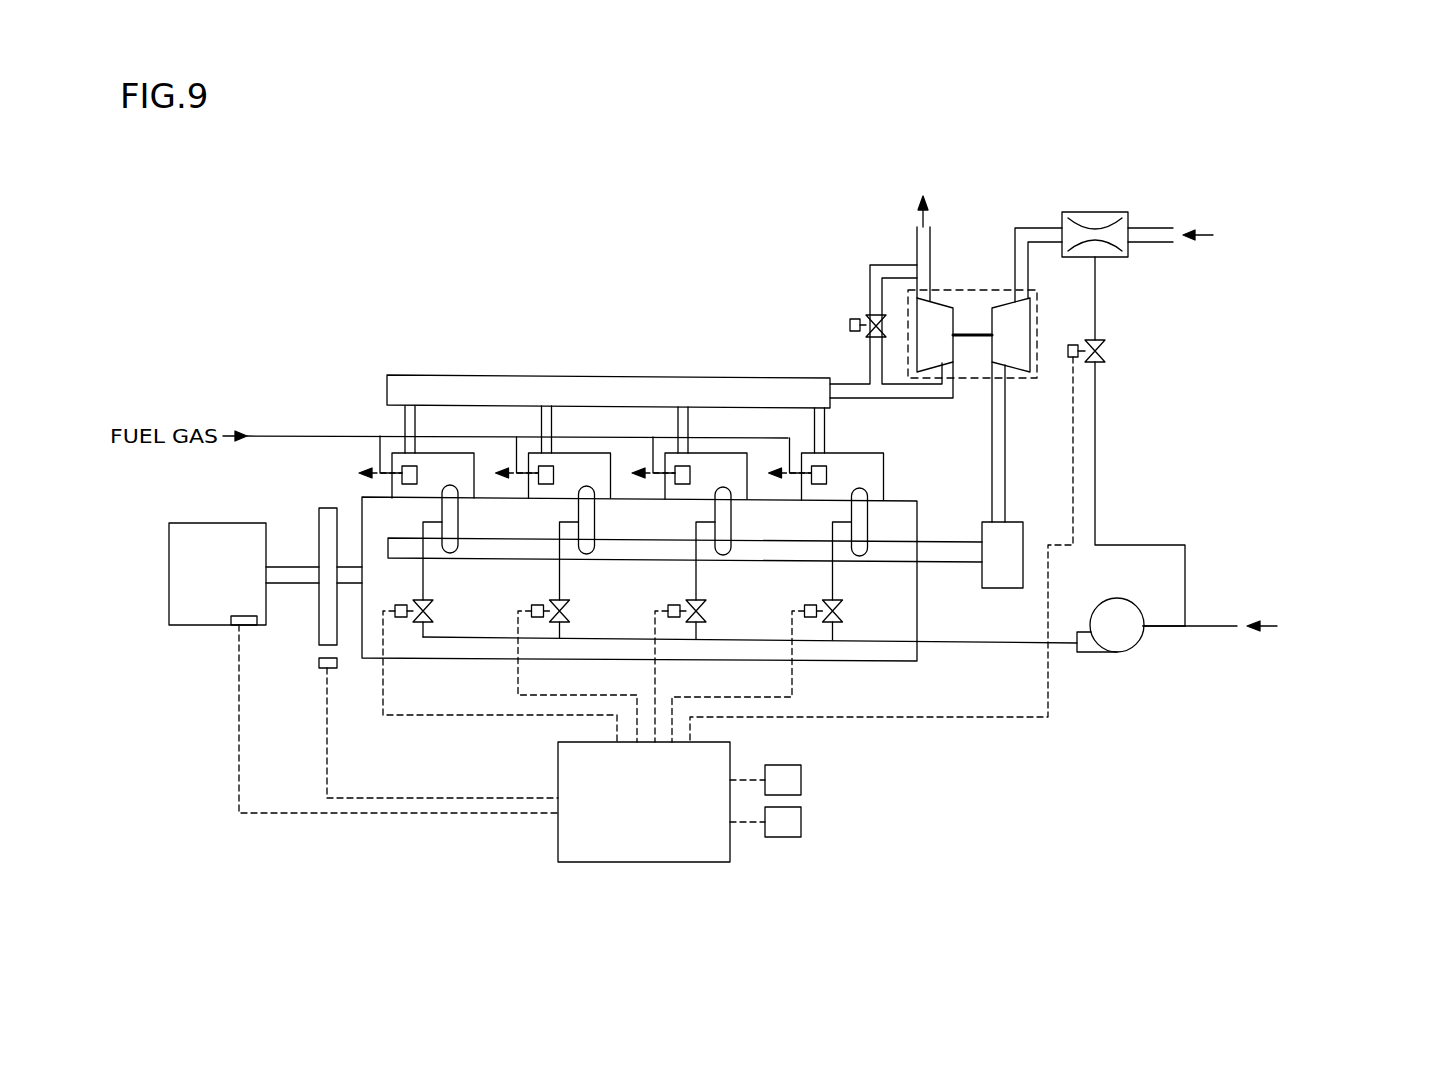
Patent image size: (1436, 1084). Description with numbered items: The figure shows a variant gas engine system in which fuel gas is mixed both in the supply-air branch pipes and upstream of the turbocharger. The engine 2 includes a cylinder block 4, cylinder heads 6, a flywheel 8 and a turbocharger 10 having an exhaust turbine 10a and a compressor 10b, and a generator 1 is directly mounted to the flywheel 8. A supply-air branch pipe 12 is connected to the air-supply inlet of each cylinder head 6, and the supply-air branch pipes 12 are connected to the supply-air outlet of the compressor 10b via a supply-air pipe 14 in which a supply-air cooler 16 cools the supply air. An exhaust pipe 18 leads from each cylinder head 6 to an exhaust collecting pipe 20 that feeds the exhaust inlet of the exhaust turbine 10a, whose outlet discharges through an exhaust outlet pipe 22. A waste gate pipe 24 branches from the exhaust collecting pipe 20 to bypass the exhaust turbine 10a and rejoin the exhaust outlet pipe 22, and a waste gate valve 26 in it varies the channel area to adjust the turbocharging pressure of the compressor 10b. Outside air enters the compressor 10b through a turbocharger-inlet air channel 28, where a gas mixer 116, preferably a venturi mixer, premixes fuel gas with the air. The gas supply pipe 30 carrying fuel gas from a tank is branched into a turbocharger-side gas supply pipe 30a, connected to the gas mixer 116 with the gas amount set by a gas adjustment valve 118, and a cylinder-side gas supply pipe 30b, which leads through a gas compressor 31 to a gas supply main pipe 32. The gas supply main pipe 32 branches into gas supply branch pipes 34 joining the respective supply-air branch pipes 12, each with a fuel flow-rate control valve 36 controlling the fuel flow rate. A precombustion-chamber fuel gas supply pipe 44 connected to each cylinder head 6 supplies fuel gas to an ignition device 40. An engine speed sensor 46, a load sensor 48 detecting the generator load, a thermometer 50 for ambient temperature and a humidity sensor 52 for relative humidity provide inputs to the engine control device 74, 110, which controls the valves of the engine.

The generator 1 is at (211, 523).
The engine 2 is at (424, 664).
The cylinder block 4 is at (918, 521).
The cylinder head 6 is at (884, 473).
The flywheel 8 is at (319, 515).
The turbocharger 10 is at (993, 290).
The exhaust turbine 10a is at (935, 300).
The compressor 10b is at (1030, 312).
The supply-air branch pipe 12 is at (850, 512).
The supply-air pipe 14 is at (1006, 482).
The supply-air cooler 16 is at (1003, 588).
The exhaust pipe 18 is at (826, 434).
The exhaust collecting pipe 20 is at (600, 376).
The exhaust outlet pipe 22 is at (917, 240).
The waste gate pipe 24 is at (870, 280).
The waste gate valve 26 is at (868, 338).
The turbocharger-inlet air channel 28 is at (1040, 228).
The gas supply pipe 30 is at (1214, 625).
The turbocharger-side gas supply pipe 30a is at (1097, 436).
The cylinder-side gas supply pipe 30b is at (1167, 628).
The gas compressor 31 is at (1116, 653).
The gas supply main pipe 32 is at (990, 645).
The gas supply branch pipe 34 is at (832, 578).
The fuel flow-rate control valve 36 is at (838, 603).
The ignition device 40 is at (828, 476).
The precombustion-chamber fuel gas supply pipe 44 is at (787, 440).
The engine speed sensor 46 is at (321, 668).
The load sensor 48 is at (233, 624).
The thermometer 50 is at (803, 780).
The humidity sensor 52 is at (803, 822).
The engine control device 74 is at (699, 622).
The engine control device 110 is at (650, 862).
The gas mixer 116 is at (1093, 212).
The gas adjustment valve 118 is at (1105, 350).